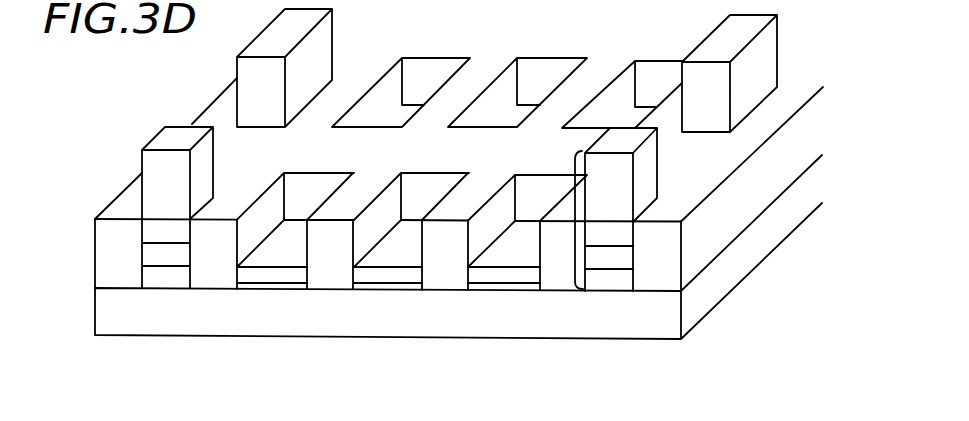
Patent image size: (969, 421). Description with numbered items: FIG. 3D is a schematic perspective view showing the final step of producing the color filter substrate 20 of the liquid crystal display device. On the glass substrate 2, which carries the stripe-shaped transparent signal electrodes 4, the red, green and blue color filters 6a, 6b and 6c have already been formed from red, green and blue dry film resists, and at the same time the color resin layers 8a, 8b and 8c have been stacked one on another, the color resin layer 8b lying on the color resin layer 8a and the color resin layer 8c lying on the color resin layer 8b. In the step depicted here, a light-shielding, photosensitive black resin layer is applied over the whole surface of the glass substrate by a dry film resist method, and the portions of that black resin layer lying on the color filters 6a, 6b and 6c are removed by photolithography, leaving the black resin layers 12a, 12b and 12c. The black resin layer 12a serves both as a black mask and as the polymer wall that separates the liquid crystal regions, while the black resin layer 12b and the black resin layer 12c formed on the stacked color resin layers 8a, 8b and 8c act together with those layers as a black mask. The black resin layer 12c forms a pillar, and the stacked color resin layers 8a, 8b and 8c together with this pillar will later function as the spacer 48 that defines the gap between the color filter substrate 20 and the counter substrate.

The glass substrate 2 is at (670, 330).
The transparent signal electrodes 4 is at (250, 287).
The color filter 6a is at (285, 277).
The color filter 6b is at (395, 278).
The color filter 6c is at (512, 278).
The color resin layer 8a is at (595, 283).
The color resin layer 8b is at (608, 266).
The color resin layer 8c is at (620, 237).
The black resin layer 12a is at (445, 270).
The black resin layer 12b is at (563, 280).
The pillar 12c is at (620, 185).
The color filter substrate 20 is at (808, 267).
The spacer 48 is at (568, 213).